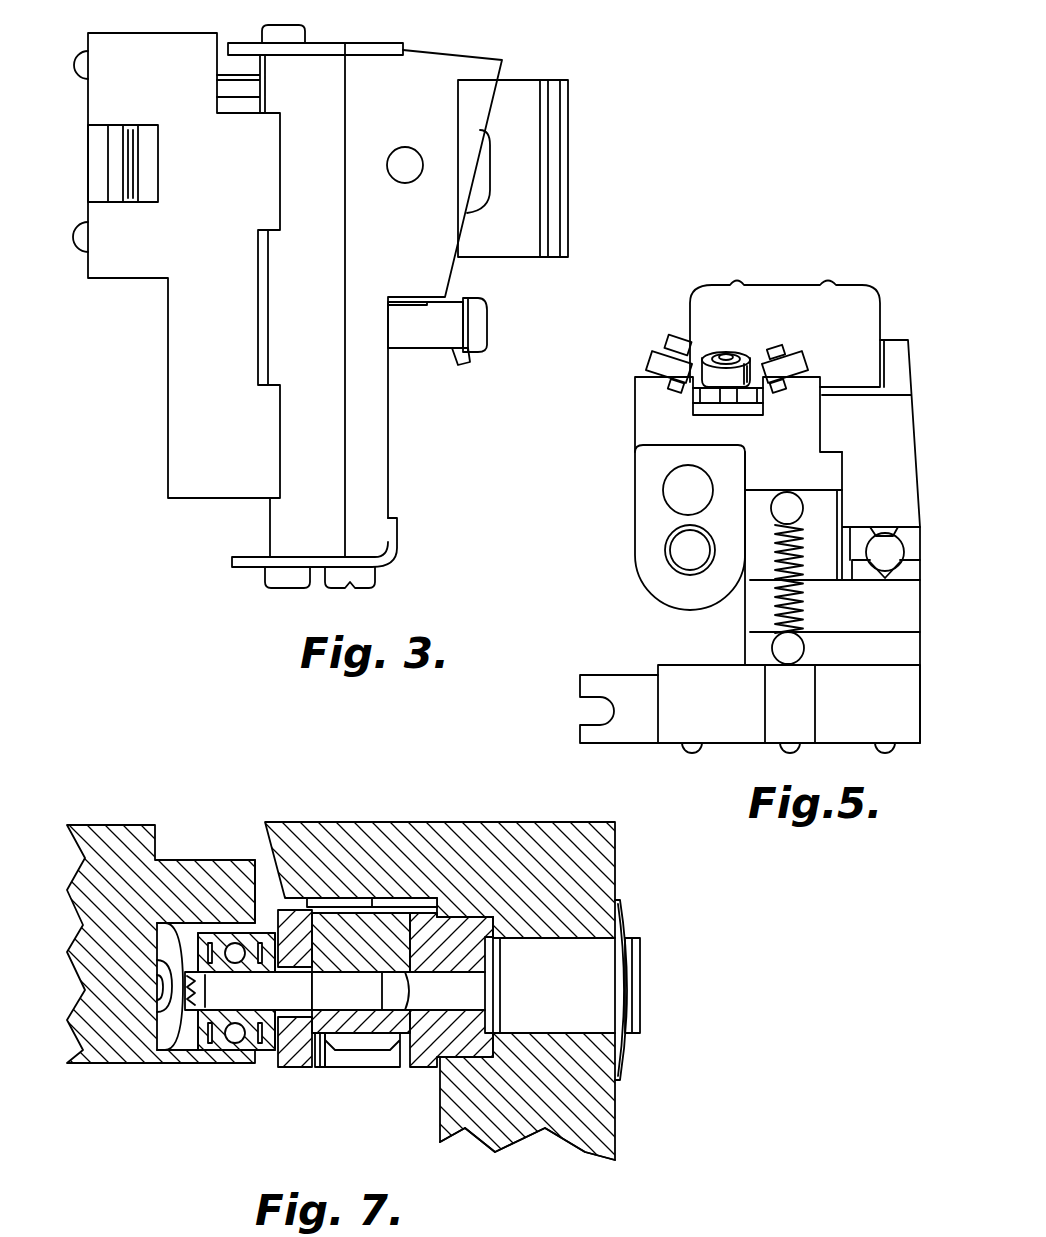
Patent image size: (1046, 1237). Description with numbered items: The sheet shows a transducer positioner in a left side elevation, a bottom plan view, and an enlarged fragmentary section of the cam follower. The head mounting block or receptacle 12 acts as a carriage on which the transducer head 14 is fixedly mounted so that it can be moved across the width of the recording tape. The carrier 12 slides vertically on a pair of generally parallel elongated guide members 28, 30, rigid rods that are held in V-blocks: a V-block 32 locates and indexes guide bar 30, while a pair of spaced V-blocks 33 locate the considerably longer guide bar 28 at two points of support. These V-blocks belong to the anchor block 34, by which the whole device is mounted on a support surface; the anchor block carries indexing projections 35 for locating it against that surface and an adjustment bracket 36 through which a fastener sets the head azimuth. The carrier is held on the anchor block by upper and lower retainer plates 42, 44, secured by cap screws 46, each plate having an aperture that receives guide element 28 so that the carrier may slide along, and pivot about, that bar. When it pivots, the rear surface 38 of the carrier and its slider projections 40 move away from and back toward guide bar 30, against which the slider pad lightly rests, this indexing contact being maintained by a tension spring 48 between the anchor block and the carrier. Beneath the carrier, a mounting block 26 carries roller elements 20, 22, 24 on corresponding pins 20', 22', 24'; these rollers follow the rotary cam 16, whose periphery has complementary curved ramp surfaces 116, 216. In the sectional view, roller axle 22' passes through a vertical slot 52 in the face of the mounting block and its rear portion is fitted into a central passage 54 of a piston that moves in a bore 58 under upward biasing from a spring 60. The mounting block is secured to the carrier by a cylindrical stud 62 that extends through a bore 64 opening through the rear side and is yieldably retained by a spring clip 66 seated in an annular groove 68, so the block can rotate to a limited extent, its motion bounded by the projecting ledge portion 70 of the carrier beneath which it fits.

In FIG. 3, the head mounting block 12 is at (428, 114).
In FIG. 5, the head mounting block 12 is at (898, 372).
In FIG. 7, the head mounting block 12 is at (600, 1112).
In FIG. 3, the head 14 is at (530, 152).
In FIG. 5, the head 14 is at (856, 330).
In FIG. 7, the rotary cam 16 is at (187, 900).
In FIG. 3, the roller element 20 is at (500, 319).
In FIG. 5, the roller element 20 is at (643, 366).
In FIG. 5, the pin 20' is at (664, 350).
In FIG. 3, the roller element 22 is at (473, 369).
In FIG. 5, the roller element 22 is at (725, 349).
In FIG. 7, the roller element 22 is at (235, 1023).
In FIG. 5, the roller axle 22' is at (745, 337).
In FIG. 7, the roller axle 22' is at (248, 991).
In FIG. 5, the roller element 24 is at (805, 367).
In FIG. 5, the pin 24' is at (791, 354).
In FIG. 3, the mounting block 26 is at (420, 333).
In FIG. 5, the mounting block 26 is at (676, 428).
In FIG. 7, the mounting block 26 is at (455, 915).
In FIG. 3, the guide member 28 is at (300, 33).
In FIG. 5, the guide member 28 is at (702, 561).
In FIG. 5, the guide member 30 is at (897, 563).
In FIG. 5, the V-block 32 is at (912, 573).
In FIG. 3, the V-blocks 33 is at (272, 182).
In FIG. 5, the anchor block 34 is at (872, 707).
In FIG. 3, the indexing projections 35 is at (84, 68).
In FIG. 5, the indexing projections 35 is at (698, 752).
In FIG. 3, the adjustment bracket 36 is at (130, 137).
In FIG. 5, the adjustment bracket 36 is at (646, 717).
In FIG. 5, the rear surface 38 is at (852, 526).
In FIG. 7, the rear surface 38 is at (617, 1148).
In FIG. 5, the slider projections 40 is at (900, 530).
In FIG. 3, the upper retainer plate 42 is at (374, 48).
In FIG. 3, the lower retainer plate 44 is at (398, 540).
In FIG. 5, the lower retainer plate 44 is at (666, 536).
In FIG. 3, the cap screws 46 is at (370, 576).
In FIG. 5, the cap screws 46 is at (700, 501).
In FIG. 5, the tension spring 48 is at (801, 600).
In FIG. 7, the vertical slot 52 is at (293, 1042).
In FIG. 7, the central passage 54 is at (392, 990).
In FIG. 7, the bore 58 is at (318, 1062).
In FIG. 7, the spring 60 is at (393, 1047).
In FIG. 7, the cylindrical stud 62 is at (559, 992).
In FIG. 7, the bore 64 is at (545, 1020).
In FIG. 7, the spring clip 66 is at (622, 906).
In FIG. 7, the annular groove 68 is at (641, 986).
In FIG. 7, the ledge portion 70 is at (304, 900).
In FIG. 7, the ramp surface 116 is at (180, 1053).
In FIG. 7, the ramp surface 216 is at (198, 928).